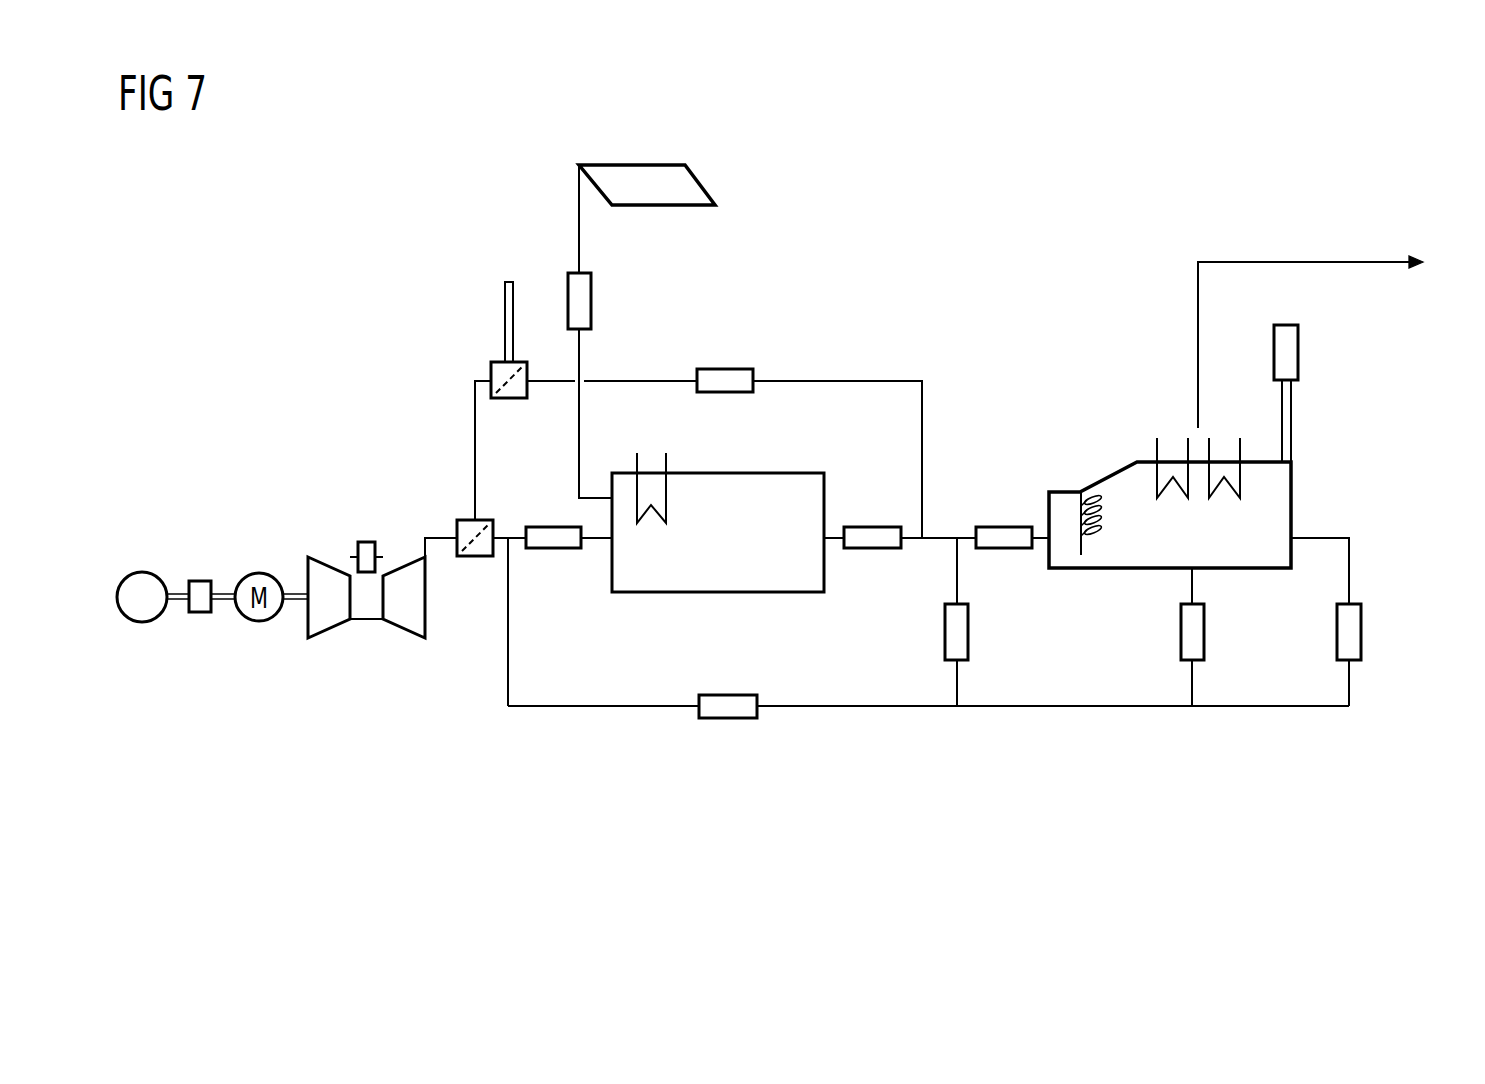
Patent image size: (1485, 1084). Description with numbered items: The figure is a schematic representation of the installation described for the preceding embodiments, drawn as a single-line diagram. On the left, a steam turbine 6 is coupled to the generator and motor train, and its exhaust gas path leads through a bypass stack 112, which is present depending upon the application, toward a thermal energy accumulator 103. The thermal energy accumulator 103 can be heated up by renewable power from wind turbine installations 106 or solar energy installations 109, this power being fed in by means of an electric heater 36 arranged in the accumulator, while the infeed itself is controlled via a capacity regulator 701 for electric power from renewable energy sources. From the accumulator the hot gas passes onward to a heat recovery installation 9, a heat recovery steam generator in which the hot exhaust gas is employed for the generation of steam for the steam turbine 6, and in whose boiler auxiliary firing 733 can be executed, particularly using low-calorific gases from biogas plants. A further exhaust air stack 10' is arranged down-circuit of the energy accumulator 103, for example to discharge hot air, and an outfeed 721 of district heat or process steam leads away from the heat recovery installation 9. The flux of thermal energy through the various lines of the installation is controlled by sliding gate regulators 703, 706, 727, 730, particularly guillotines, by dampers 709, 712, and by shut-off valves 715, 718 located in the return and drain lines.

The steam turbine 6 is at (368, 625).
The heat recovery installation 9 is at (1291, 498).
The further exhaust air stack 10' is at (1327, 393).
The electric heater 36 is at (666, 460).
The thermal energy accumulator 103 is at (727, 595).
The wind turbine installations 106 is at (647, 142).
The solar energy installations 109 is at (630, 163).
The bypass stack 112 is at (505, 322).
The capacity regulator 701 is at (591, 300).
The sliding gate regulator 703 is at (723, 368).
The sliding gate regulator 706 is at (553, 550).
The damper 709 is at (727, 720).
The damper 712 is at (968, 632).
The shut-off valve 715 is at (1204, 632).
The shut-off valve 718 is at (1361, 632).
The outfeed 721 is at (1300, 260).
The sliding gate regulator 727 is at (868, 526).
The sliding gate regulator 730 is at (1000, 526).
The auxiliary firing 733 is at (1082, 493).